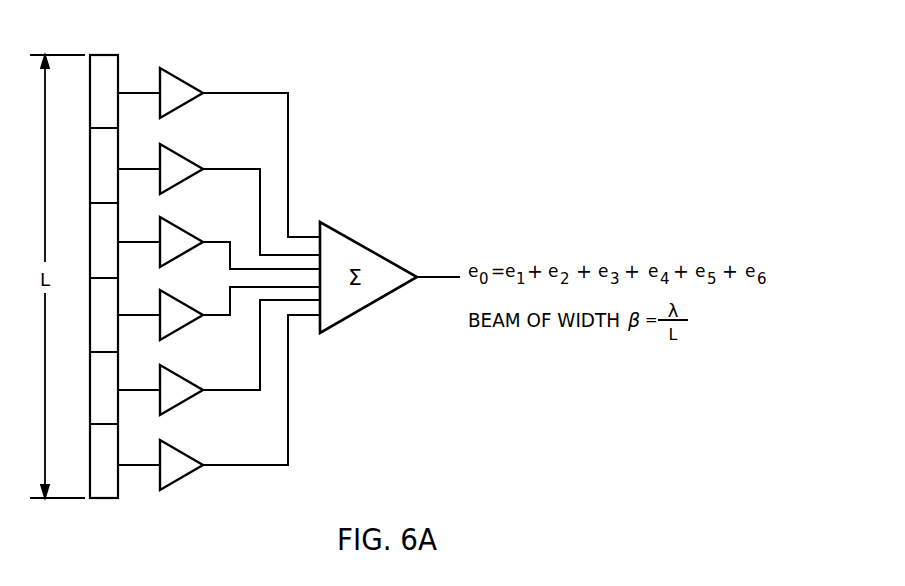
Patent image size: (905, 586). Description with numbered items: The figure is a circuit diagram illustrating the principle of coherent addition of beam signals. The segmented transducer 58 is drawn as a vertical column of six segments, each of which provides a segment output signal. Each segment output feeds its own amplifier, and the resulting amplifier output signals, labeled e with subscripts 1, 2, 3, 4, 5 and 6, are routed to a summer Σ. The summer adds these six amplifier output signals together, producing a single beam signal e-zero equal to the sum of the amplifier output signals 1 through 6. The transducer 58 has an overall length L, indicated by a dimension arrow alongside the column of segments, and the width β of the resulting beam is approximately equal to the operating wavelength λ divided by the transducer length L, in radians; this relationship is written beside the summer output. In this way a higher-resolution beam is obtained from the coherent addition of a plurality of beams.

The transducer 58 is at (90, 48).
The amplifier output e1 1 is at (219, 402).
The amplifier output e2 2 is at (219, 357).
The amplifier output e3 3 is at (219, 313).
The amplifier output e4 4 is at (219, 242).
The amplifier output e5 5 is at (219, 198).
The amplifier output e6 6 is at (219, 151).